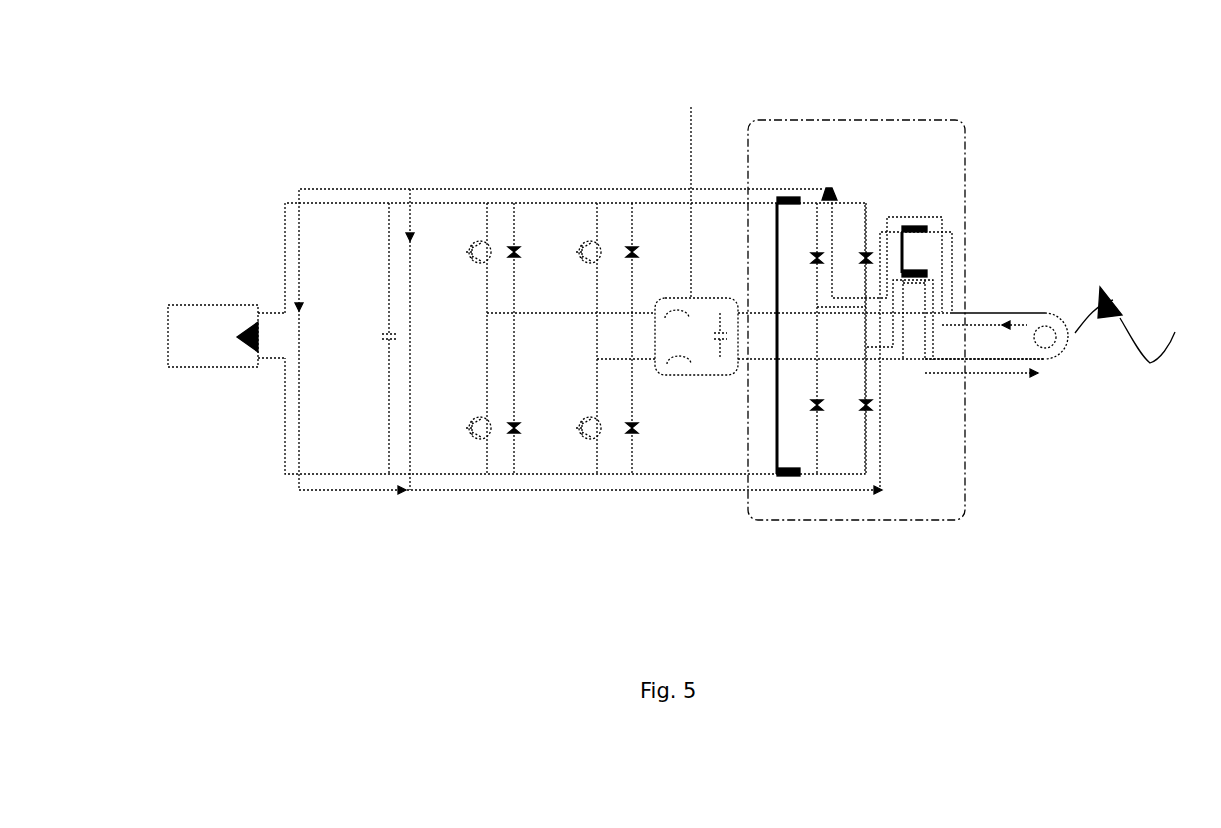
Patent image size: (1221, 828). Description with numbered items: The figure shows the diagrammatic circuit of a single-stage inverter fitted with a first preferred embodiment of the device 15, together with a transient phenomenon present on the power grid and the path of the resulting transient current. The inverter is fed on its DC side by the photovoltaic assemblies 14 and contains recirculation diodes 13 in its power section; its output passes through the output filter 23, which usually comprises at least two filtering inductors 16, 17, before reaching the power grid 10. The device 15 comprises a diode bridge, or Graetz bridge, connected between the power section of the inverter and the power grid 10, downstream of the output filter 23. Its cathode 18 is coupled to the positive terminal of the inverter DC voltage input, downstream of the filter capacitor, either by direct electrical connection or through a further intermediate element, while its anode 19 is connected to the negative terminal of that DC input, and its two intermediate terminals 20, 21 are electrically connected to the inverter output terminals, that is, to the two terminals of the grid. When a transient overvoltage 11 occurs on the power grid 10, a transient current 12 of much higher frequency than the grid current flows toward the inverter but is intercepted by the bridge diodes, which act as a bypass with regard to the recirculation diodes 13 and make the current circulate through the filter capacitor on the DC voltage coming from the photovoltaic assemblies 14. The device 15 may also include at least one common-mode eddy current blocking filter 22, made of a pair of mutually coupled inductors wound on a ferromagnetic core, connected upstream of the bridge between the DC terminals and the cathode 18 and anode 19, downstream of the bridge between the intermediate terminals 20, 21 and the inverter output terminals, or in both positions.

The power grid 10 is at (1052, 345).
The transient overvoltage 11 is at (1120, 300).
The transient current 12 is at (987, 317).
The recirculation diodes 13 is at (627, 250).
The photovoltaic assemblies 14 is at (218, 322).
The device 15 is at (858, 163).
The filtering inductor 16 is at (692, 118).
The filtering inductor 17 is at (702, 375).
The cathode 18 is at (828, 195).
The anode 19 is at (817, 473).
The intermediate terminal 20 is at (833, 293).
The intermediate terminal 21 is at (870, 348).
The common-mode eddy current blocking filter 22 is at (940, 215).
The output filter 23 is at (732, 375).